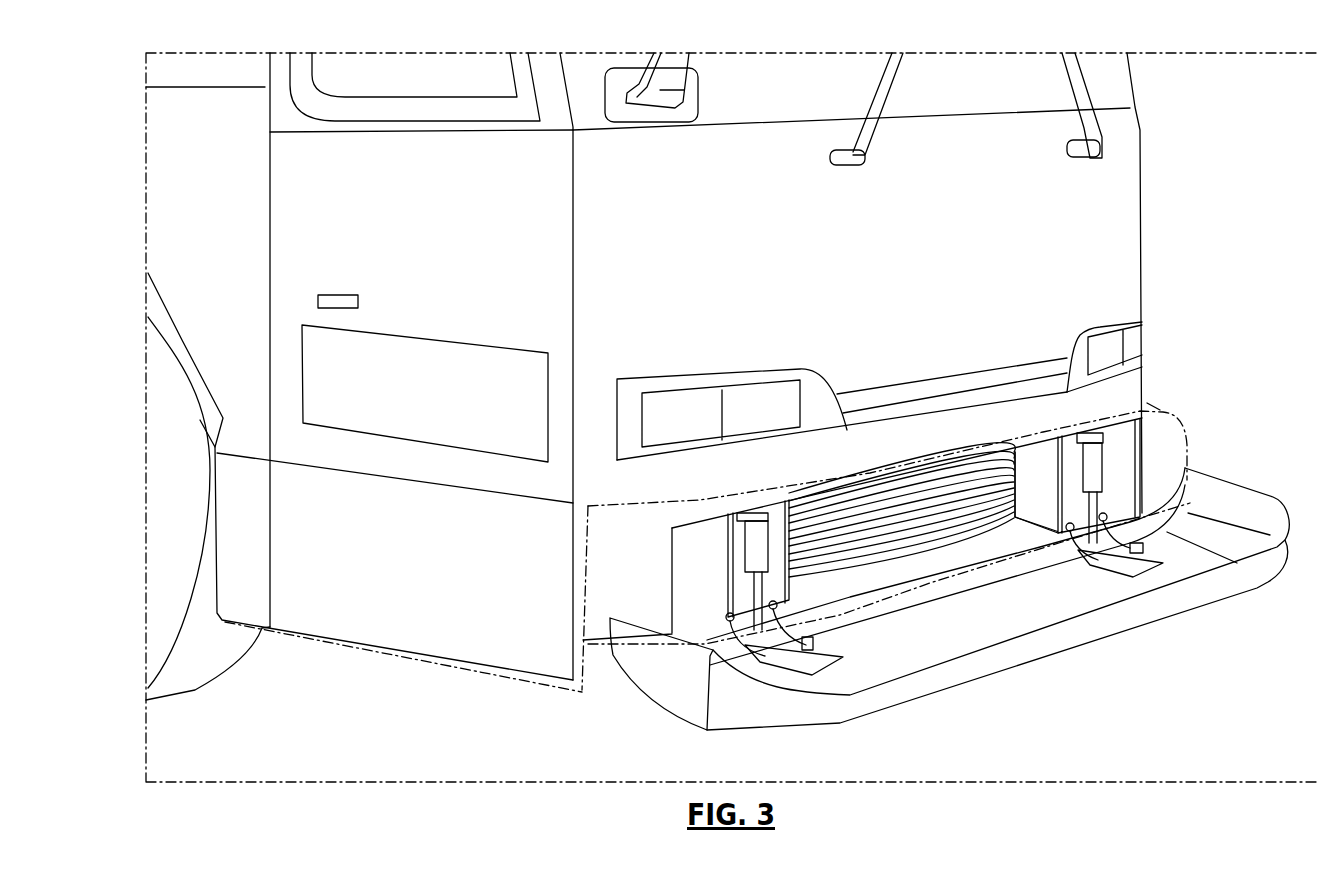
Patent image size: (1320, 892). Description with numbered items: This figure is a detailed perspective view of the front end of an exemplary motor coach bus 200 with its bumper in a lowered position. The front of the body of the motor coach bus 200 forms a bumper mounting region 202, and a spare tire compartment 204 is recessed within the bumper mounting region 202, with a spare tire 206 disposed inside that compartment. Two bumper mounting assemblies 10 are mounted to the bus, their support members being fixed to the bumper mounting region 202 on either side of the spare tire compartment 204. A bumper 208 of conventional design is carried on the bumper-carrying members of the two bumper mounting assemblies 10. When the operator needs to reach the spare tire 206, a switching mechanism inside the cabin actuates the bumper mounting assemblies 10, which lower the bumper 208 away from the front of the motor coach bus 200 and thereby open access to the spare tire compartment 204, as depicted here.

The bumper mounting assembly 10 is at (710, 568).
The motor coach bus 200 is at (907, 250).
The bumper mounting region 202 is at (697, 550).
The spare tire compartment 204 is at (1046, 622).
The spare tire 206 is at (870, 512).
The bumper 208 is at (958, 638).